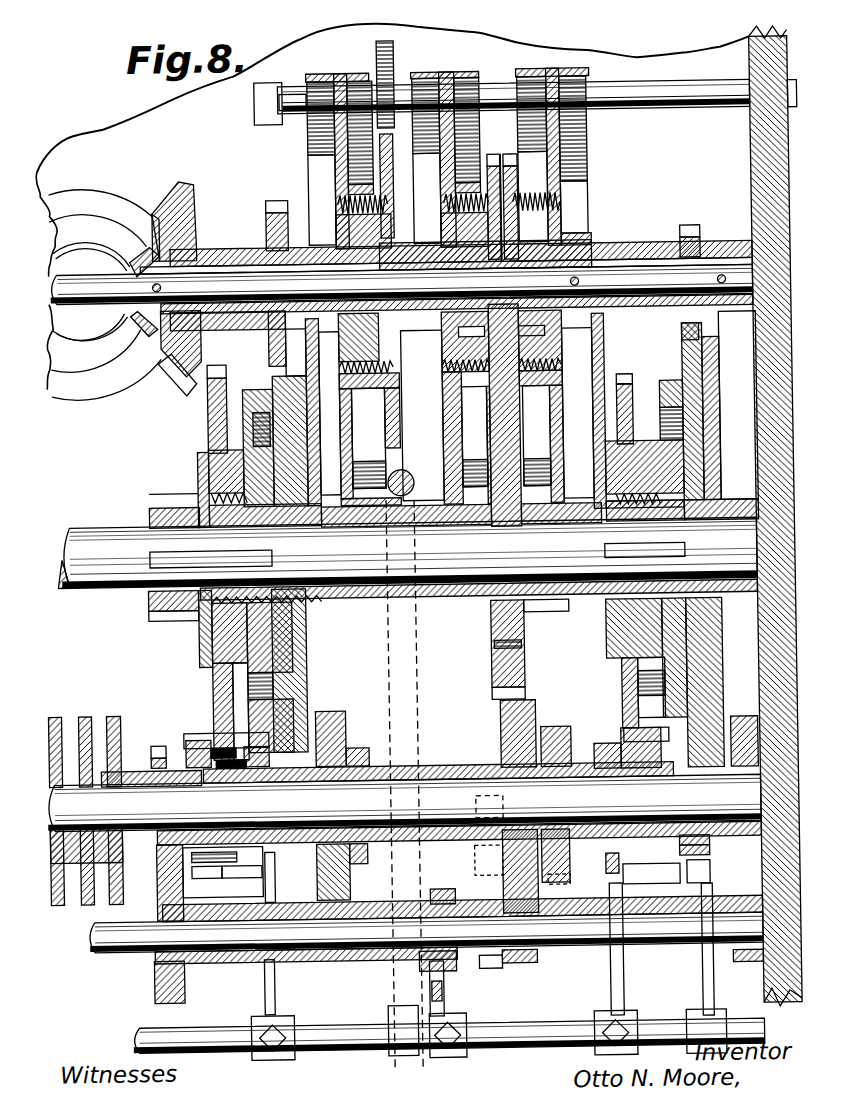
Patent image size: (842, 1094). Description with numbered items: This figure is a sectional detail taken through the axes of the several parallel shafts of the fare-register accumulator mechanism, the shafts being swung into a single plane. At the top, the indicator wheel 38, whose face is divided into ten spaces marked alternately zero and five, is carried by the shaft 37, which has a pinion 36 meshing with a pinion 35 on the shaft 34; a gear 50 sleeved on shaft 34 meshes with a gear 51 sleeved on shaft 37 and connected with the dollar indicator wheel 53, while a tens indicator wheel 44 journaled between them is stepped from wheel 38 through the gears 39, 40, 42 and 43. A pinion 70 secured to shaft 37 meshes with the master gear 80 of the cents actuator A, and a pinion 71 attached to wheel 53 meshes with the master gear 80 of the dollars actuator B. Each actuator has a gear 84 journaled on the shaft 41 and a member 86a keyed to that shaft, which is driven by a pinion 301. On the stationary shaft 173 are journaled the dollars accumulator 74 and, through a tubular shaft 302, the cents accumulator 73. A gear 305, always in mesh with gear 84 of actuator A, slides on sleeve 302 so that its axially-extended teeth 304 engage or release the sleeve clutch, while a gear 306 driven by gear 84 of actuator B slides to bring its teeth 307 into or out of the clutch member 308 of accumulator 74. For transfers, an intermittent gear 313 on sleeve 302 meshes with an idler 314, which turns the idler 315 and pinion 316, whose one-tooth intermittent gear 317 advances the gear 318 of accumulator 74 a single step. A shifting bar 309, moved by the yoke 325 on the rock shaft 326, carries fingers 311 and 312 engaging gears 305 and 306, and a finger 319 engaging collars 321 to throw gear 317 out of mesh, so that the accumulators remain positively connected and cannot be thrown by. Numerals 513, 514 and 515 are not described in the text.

The pinion 35 is at (70, 227).
The gear 50 is at (113, 208).
The gear 51 is at (187, 193).
The shaft 34 is at (87, 303).
The pinion 36 is at (143, 327).
The shaft 37 is at (210, 265).
The pinion 71 is at (275, 198).
The pinion 70 is at (688, 225).
The dollar indicator wheel 53 is at (322, 72).
The gear 514 is at (395, 50).
The tens indicator wheel 44 is at (470, 72).
The shaft 513 is at (652, 90).
The gear 43 is at (493, 155).
The gear 39 is at (508, 155).
The indicator wheel 38 is at (583, 190).
The gear 84 is at (225, 378).
The master gear 80 is at (683, 357).
The dollars actuator B is at (215, 410).
The cents actuator A is at (700, 395).
The member 86a is at (250, 468).
The pinion 301 is at (152, 505).
The rock shaft 326 is at (400, 469).
The gear 515 is at (405, 407).
The shaft 41 is at (90, 617).
The gear 42 is at (490, 630).
The gear 40 is at (527, 622).
The gear 318 is at (158, 745).
The clutch member 308 is at (190, 740).
The intermittent gear 313 is at (520, 735).
The tubular shaft 302 is at (427, 768).
The gear 305 is at (615, 745).
The axially-extended teeth 304 is at (700, 725).
The stationary shaft 173 is at (405, 802).
The dollars accumulator 74 is at (115, 905).
The axially-extended teeth 307 is at (222, 875).
The gear 306 is at (253, 875).
The cents accumulator 73 is at (345, 883).
The idler 315 is at (478, 872).
The collars 321 is at (443, 890).
The idler 314 is at (560, 885).
The shifting bar 309 is at (686, 860).
The finger 312 is at (710, 870).
The one-tooth intermittent gear 317 is at (160, 985).
The finger 319 is at (444, 990).
The pinion 316 is at (497, 970).
The finger 311 is at (608, 985).
The yoke 325 is at (395, 1058).